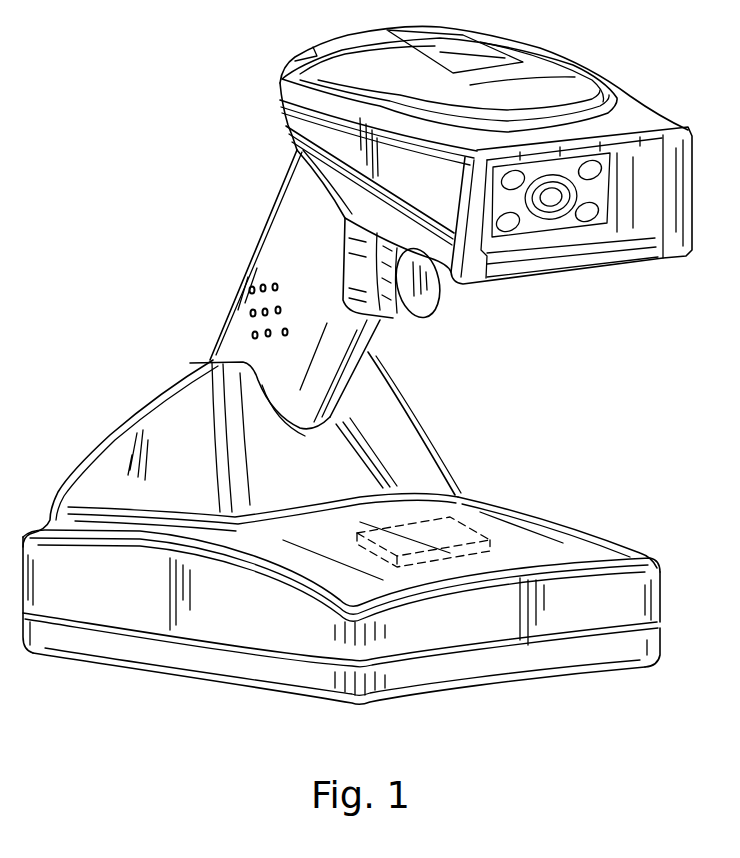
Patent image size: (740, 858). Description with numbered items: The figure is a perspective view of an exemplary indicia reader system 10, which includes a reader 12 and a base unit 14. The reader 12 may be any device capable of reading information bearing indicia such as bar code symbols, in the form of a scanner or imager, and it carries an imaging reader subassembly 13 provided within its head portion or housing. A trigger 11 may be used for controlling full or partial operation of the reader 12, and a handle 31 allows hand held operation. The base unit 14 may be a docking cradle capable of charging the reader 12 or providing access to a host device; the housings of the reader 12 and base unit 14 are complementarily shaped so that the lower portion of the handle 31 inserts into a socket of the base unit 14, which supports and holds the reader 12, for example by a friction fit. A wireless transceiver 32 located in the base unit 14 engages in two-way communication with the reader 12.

The indicia reader system 10 is at (86, 192).
The trigger 11 is at (428, 287).
The reader 12 is at (285, 76).
The imaging reader subassembly 13 is at (561, 222).
The base unit 14 is at (604, 549).
The handle 31 is at (275, 262).
The wireless transceiver 32 is at (485, 541).